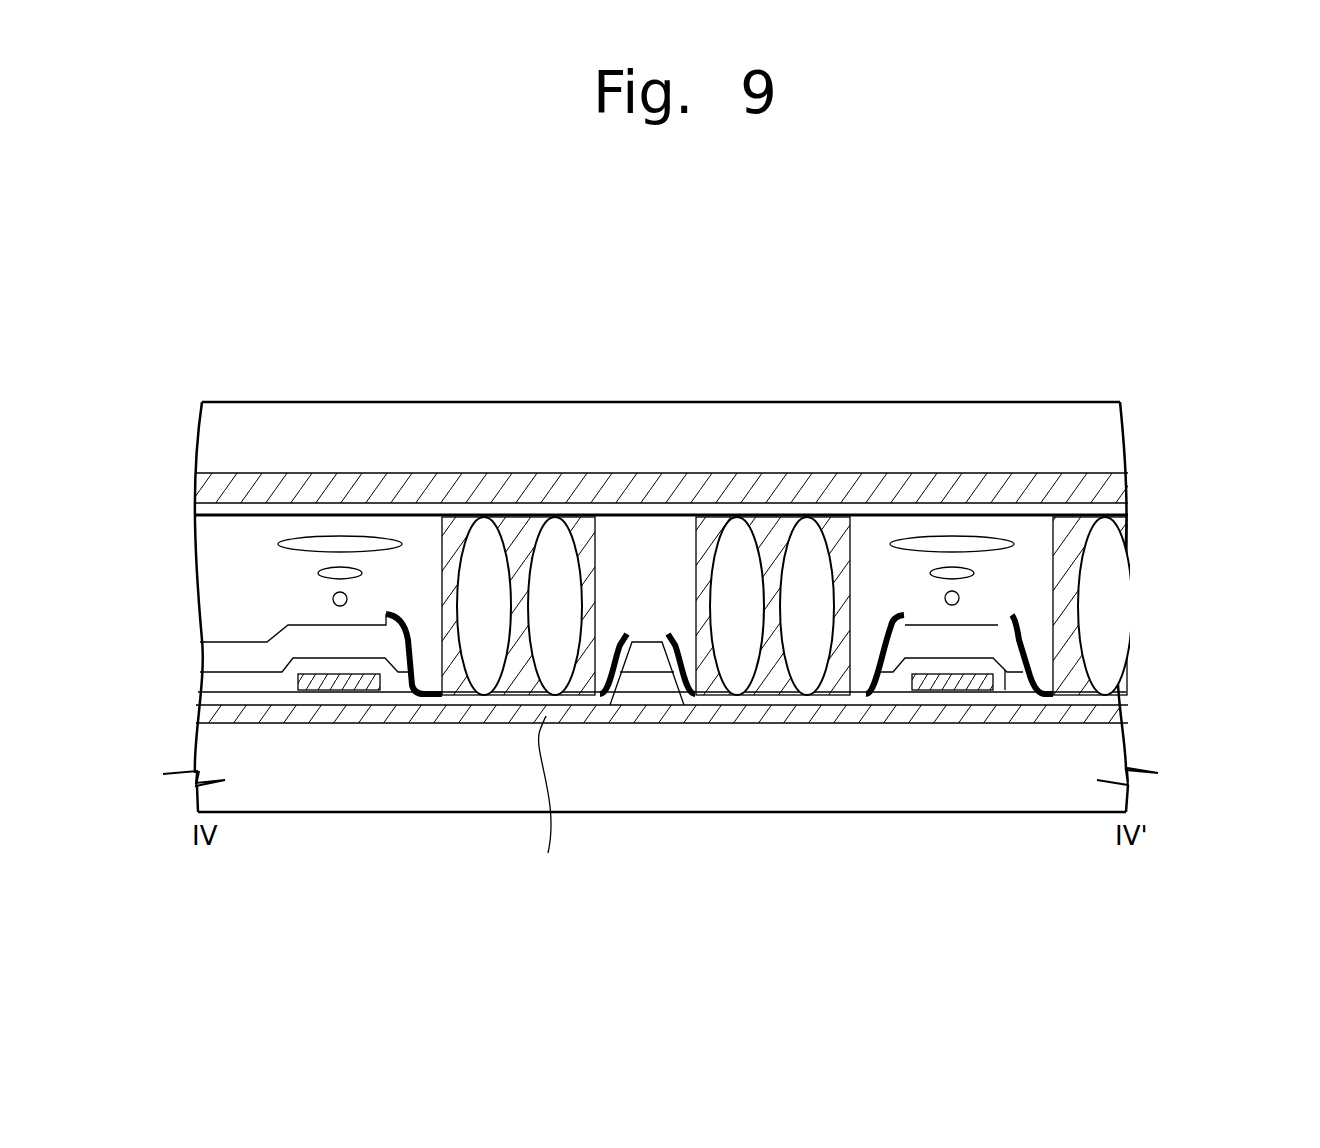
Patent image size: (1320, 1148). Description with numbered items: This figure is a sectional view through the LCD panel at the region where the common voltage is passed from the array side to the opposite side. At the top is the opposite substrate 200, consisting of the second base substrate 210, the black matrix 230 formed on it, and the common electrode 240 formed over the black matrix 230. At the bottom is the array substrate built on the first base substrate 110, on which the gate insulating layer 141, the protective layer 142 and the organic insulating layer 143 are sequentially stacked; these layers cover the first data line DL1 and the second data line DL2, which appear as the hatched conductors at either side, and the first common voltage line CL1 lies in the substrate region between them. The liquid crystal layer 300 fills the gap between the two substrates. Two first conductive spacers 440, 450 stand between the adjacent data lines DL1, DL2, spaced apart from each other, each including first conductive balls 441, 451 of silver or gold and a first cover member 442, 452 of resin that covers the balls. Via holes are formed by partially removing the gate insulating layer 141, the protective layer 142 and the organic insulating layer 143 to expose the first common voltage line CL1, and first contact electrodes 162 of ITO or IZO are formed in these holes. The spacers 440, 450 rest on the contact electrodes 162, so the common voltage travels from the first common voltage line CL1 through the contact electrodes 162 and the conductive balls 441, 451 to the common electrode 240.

The opposite substrate 200 is at (751, 471).
The second base substrate 210 is at (1108, 437).
The black matrix 230 is at (1108, 492).
The common electrode 240 is at (713, 523).
The first base substrate 110 is at (1113, 748).
The liquid crystal layer 300 is at (222, 573).
The first conductive spacer 440 is at (520, 485).
The first conductive balls 441 is at (483, 535).
The first cover member 442 is at (520, 535).
The first conductive spacer 450 is at (773, 485).
The first conductive balls 451 is at (737, 537).
The first cover member 452 is at (773, 535).
The organic insulating layer 143 is at (267, 660).
The gate insulating layer 141 is at (399, 697).
The first contact electrodes 162 is at (462, 700).
The first data line DL1 is at (338, 684).
The second data line DL2 is at (933, 684).
The first common voltage line CL1 is at (547, 803).
The protective layer 142 is at (1005, 684).